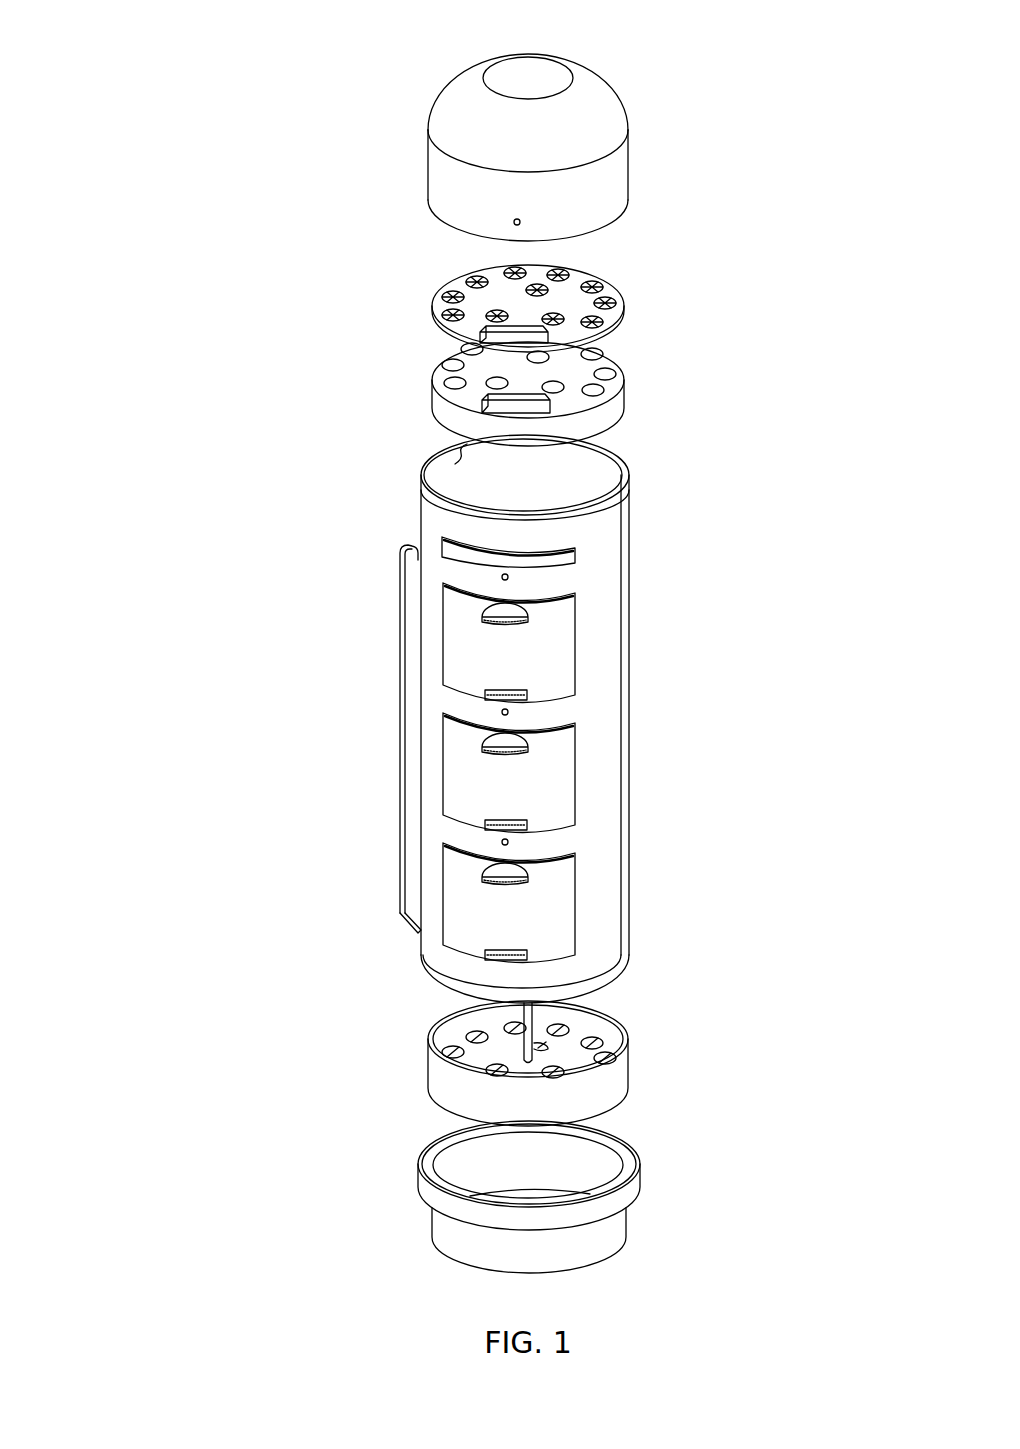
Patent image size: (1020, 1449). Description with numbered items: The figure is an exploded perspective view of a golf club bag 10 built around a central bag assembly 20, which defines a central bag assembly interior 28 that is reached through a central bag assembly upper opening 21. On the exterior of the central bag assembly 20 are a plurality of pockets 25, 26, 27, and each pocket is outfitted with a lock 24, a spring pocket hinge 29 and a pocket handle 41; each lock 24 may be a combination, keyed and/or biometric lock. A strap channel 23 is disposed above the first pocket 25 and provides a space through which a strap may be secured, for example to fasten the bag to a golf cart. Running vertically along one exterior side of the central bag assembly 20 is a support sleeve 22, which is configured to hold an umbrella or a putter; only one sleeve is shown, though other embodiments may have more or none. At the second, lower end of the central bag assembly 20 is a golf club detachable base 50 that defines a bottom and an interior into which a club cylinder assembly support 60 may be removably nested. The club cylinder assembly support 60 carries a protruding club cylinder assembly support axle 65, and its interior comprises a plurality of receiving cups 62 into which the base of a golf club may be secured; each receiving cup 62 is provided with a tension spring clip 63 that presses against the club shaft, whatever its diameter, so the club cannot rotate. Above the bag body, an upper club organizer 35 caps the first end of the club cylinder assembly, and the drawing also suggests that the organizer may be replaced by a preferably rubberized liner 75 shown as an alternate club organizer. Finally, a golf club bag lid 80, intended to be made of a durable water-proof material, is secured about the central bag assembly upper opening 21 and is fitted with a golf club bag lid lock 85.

The golf club bag 10 is at (146, 191).
The central bag assembly 20 is at (362, 666).
The central bag assembly upper opening 21 is at (458, 459).
The support sleeve 22 is at (403, 545).
The strap channel 23 is at (565, 545).
The lock 24 is at (508, 577).
The first pocket 25 is at (512, 653).
The pocket 26 is at (510, 788).
The pocket 27 is at (510, 922).
The central bag assembly interior 28 is at (587, 470).
The spring pocket hinge 29 is at (505, 695).
The upper club organizer 35 is at (585, 370).
The pocket handle 41 is at (488, 612).
The golf club detachable base 50 is at (428, 1183).
The club cylinder assembly support 60 is at (427, 1065).
The receiving cup 62 is at (455, 1051).
The tension spring clip 63 is at (512, 1032).
The club cylinder assembly support axle 65 is at (533, 1024).
The liner 75 is at (613, 278).
The golf club bag lid 80 is at (562, 52).
The golf club bag lid lock 85 is at (521, 219).